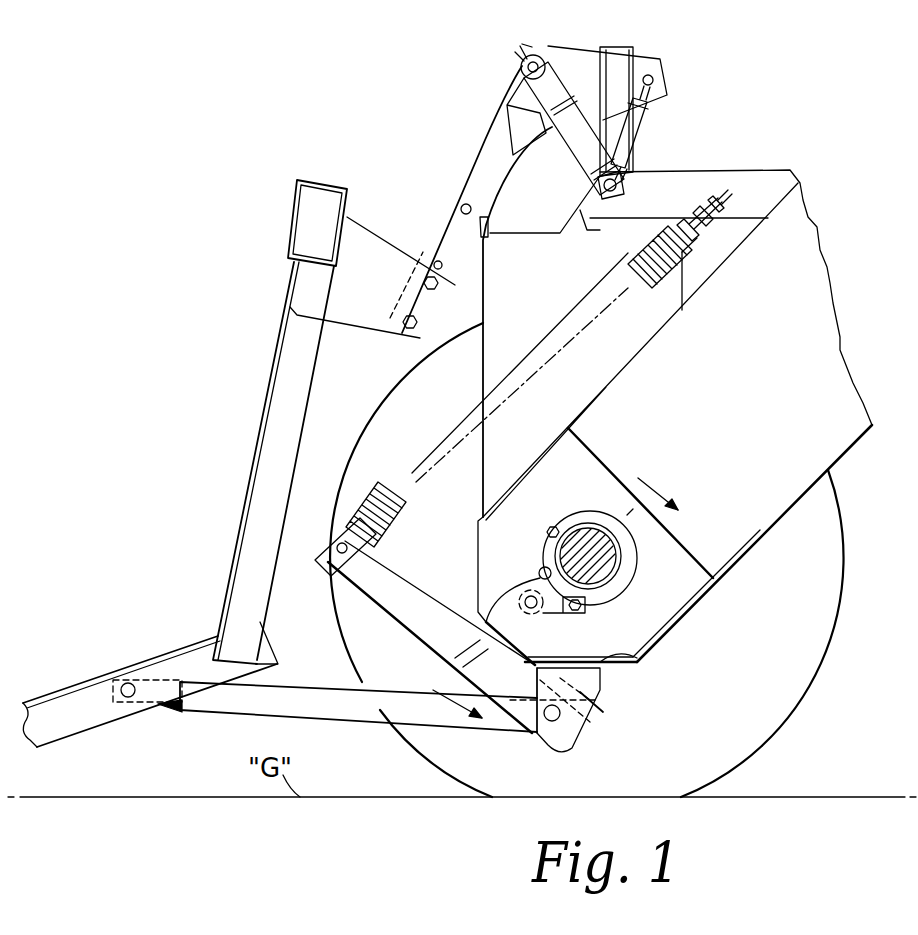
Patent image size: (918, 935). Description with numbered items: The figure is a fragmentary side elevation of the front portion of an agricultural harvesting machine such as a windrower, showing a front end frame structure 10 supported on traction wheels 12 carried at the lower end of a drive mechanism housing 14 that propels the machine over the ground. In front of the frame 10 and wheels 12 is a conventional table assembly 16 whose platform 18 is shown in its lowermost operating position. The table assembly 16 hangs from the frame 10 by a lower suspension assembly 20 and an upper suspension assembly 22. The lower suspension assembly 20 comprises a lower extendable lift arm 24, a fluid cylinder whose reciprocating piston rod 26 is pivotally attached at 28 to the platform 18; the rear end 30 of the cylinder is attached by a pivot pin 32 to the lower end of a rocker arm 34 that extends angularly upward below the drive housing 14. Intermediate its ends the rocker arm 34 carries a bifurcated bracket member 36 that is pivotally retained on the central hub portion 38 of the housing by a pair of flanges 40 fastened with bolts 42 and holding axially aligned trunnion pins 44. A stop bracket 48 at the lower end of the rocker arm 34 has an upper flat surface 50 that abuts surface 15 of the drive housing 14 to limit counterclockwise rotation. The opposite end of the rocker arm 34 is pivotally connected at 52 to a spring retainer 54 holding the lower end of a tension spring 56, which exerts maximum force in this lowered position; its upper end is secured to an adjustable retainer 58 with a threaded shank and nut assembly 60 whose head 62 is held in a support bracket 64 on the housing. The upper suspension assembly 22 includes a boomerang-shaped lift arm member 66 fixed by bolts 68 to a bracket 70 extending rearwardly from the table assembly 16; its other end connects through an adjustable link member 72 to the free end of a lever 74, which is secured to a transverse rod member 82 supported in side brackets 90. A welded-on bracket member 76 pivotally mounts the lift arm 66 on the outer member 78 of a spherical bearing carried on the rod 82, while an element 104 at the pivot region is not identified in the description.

The front end frame structure 10 is at (738, 166).
The traction wheels 12 is at (772, 693).
The drive mechanism housing 14 is at (604, 382).
The surface of drive housing 15 is at (570, 660).
The table assembly 16 is at (257, 427).
The platform 18 is at (152, 652).
The lower suspension assembly 20 is at (390, 470).
The upper suspension assembly 22 is at (470, 140).
The lower extendable lift arm 24 is at (344, 707).
The reciprocating piston rod 26 is at (172, 712).
The pivotal attachment 28 is at (128, 700).
The rear end of lift arm cylinder 30 is at (535, 730).
The pivot pin 32 is at (577, 732).
The rocker arm 34 is at (410, 610).
The bifurcated bracket member 36 is at (500, 612).
The central hub portion 38 is at (625, 560).
The flanges 40 is at (528, 548).
The bolts 42 is at (557, 522).
The trunnion pin 44 is at (522, 597).
The stop bracket 48 is at (590, 700).
The upper flat surface 50 is at (638, 661).
The pivotal connection 52 is at (335, 560).
The spring retainer 54 is at (346, 526).
The tension spring 56 is at (638, 252).
The adjustable retainer 58 is at (675, 230).
The threaded shank and nut assembly 60 is at (693, 248).
The head 62 is at (712, 212).
The support bracket 64 is at (717, 237).
The lift arm member 66 is at (470, 165).
The bolts 68 is at (417, 322).
The bracket 70 is at (378, 252).
The adjustable link member 72 is at (641, 119).
The lever 74 is at (578, 135).
The bracket member 76 is at (536, 117).
The outer member of spherical bearing 78 is at (521, 63).
The transverse rod member 82 is at (553, 50).
The side brackets 90 is at (588, 58).
The cotter pin 104 is at (531, 55).